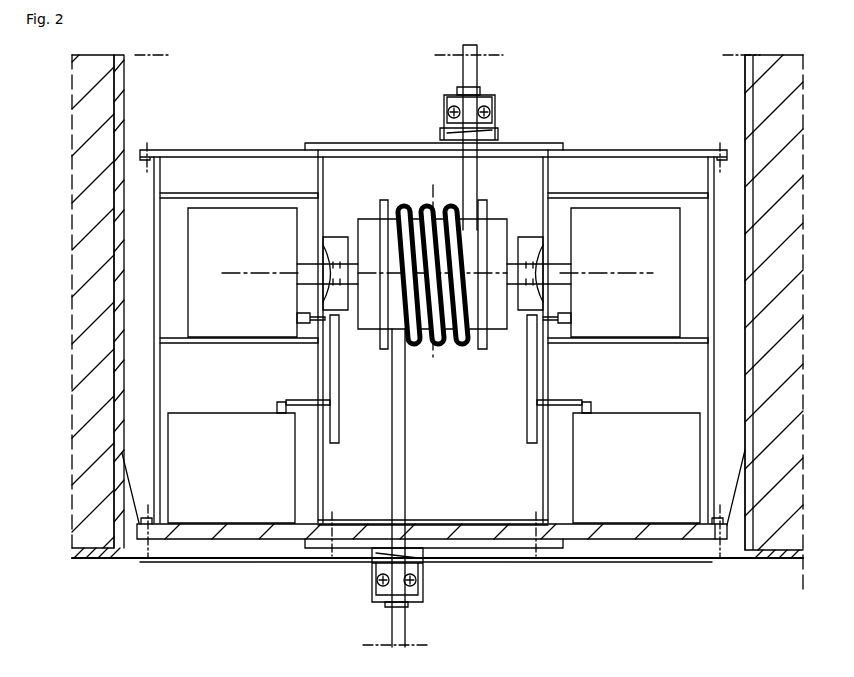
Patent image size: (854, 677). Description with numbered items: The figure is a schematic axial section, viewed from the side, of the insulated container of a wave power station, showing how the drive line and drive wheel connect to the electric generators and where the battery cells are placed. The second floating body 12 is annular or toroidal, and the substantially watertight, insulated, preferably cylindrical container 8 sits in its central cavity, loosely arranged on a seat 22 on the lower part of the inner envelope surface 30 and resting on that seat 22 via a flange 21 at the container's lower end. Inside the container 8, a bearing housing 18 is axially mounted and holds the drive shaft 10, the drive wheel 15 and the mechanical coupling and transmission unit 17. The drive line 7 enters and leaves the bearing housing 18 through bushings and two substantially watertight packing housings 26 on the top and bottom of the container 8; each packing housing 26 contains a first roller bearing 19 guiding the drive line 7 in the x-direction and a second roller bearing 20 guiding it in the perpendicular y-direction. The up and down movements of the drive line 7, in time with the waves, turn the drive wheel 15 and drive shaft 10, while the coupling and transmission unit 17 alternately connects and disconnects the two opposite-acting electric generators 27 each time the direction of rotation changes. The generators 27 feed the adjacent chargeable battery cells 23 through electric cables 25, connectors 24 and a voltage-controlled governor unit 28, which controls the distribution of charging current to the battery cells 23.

The drive line 7 is at (478, 181).
The watertight insulated container 8 is at (629, 150).
The drive shaft 10 is at (354, 217).
The second floating body 12 is at (779, 563).
The drive wheel 15 is at (391, 205).
The coupling and transmission unit 17 is at (337, 229).
The bearing housing 18 is at (325, 498).
The first roller bearing 19 is at (495, 122).
The second roller bearing 20 is at (446, 104).
The flange 21 is at (143, 520).
The seat 22 is at (131, 492).
The chargeable battery cells 23 is at (213, 412).
The connectors 24 is at (297, 313).
The electric cables 25 is at (302, 400).
The packing housings 26 is at (495, 105).
The opposite-acting electric generators 27 is at (186, 243).
The voltage-controlled governor unit 28 is at (340, 400).
The inner envelope surface 30 is at (124, 277).